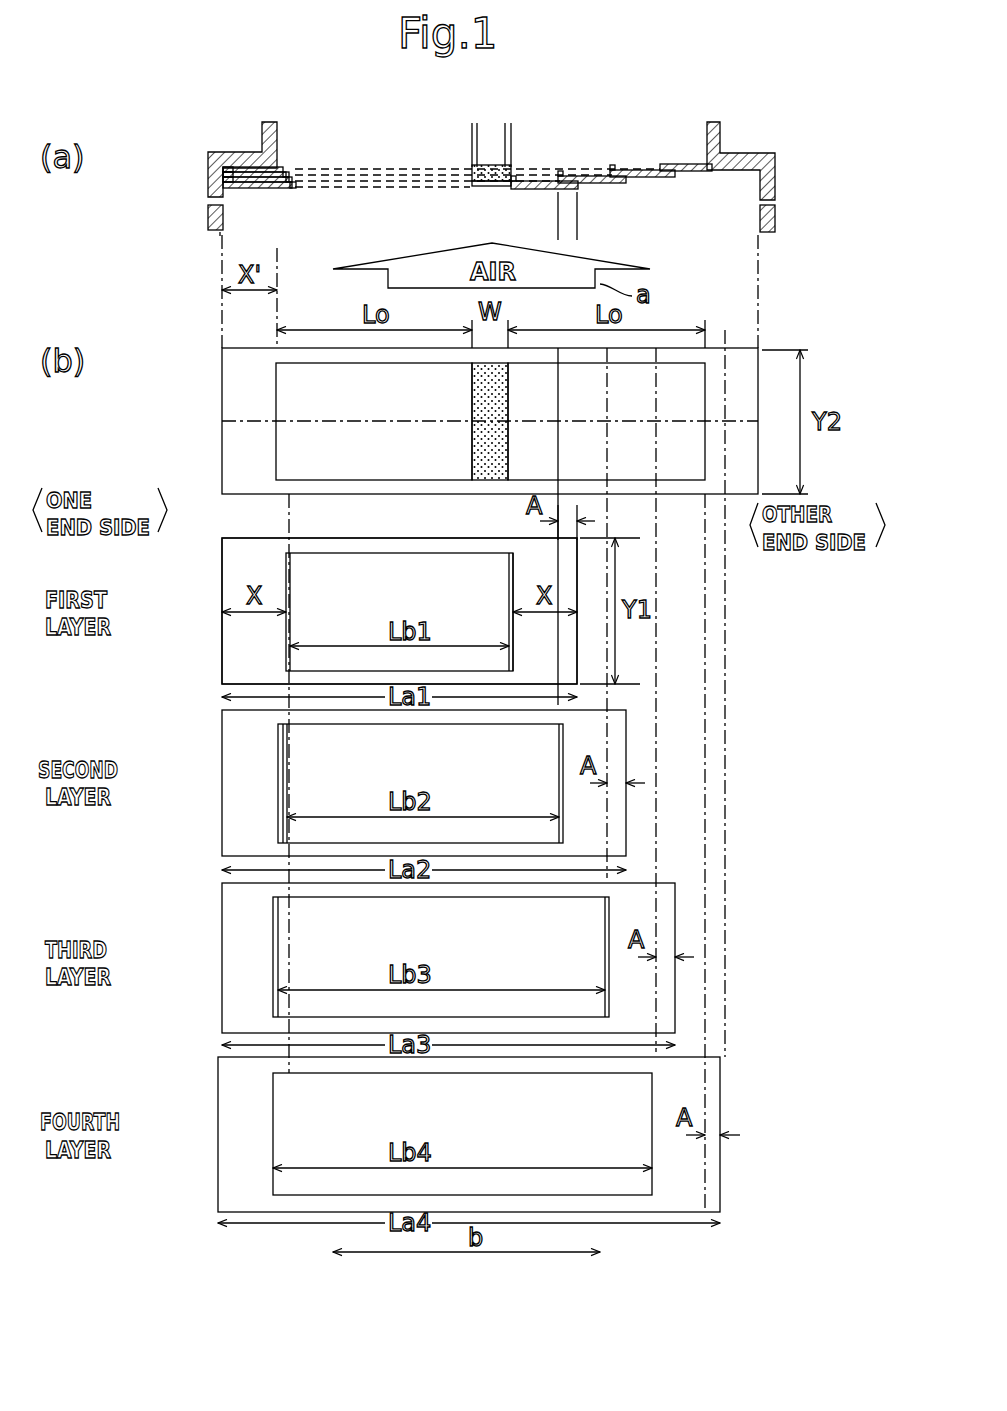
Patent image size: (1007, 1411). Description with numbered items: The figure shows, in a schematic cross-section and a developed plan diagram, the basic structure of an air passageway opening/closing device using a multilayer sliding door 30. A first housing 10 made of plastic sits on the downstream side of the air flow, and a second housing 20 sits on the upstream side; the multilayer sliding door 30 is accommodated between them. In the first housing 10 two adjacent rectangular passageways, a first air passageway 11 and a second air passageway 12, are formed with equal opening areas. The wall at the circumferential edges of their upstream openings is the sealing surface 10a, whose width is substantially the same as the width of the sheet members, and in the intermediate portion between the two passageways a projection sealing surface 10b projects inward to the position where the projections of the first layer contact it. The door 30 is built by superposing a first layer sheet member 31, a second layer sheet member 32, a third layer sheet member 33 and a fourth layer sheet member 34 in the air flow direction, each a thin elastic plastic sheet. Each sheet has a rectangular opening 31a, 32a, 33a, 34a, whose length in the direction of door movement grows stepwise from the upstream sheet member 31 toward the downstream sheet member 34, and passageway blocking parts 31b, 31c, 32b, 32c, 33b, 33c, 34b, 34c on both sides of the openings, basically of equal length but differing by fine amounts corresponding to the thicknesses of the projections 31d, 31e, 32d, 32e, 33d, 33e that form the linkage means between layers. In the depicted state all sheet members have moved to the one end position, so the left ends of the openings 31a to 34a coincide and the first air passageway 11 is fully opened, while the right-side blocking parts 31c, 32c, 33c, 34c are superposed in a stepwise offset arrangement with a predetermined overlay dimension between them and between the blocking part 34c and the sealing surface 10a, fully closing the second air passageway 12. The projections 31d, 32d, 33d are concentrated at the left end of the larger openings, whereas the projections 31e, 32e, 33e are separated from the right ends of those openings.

The first housing 10 is at (748, 138).
The sealing surface 10a is at (727, 156).
The projection sealing surface 10b is at (472, 167).
The first air passageway 11 is at (376, 128).
The second air passageway 12 is at (614, 126).
The second housing 20 is at (780, 240).
The multilayer sliding door 30 is at (680, 190).
The first layer sheet member 31 is at (222, 656).
The opening of first layer sheet member 31a is at (334, 188).
The passageway blocking part of first layer sheet member 31b is at (248, 188).
The passageway blocking part of first layer sheet member 31c is at (532, 189).
The projection of first layer sheet member 31d is at (292, 172).
The projection of first layer sheet member 31e is at (514, 180).
The second layer sheet member 32 is at (222, 812).
The opening of second layer sheet member 32a is at (354, 190).
The passageway blocking part of second layer sheet member 32b is at (226, 193).
The passageway blocking part of second layer sheet member 32c is at (590, 185).
The projection of second layer sheet member 32d is at (285, 170).
The projection of second layer sheet member 32e is at (560, 177).
The third layer sheet member 33 is at (222, 1017).
The opening of third layer sheet member 33a is at (390, 188).
The passageway blocking part of third layer sheet member 33b is at (230, 176).
The passageway blocking part of third layer sheet member 33c is at (648, 180).
The projection of third layer sheet member 33d is at (283, 167).
The projection of third layer sheet member 33e is at (612, 171).
The fourth layer sheet member 34 is at (218, 1187).
The opening of fourth layer sheet member 34a is at (441, 190).
The passageway blocking part of fourth layer sheet member 34b is at (226, 158).
The passageway blocking part of fourth layer sheet member 34c is at (695, 178).